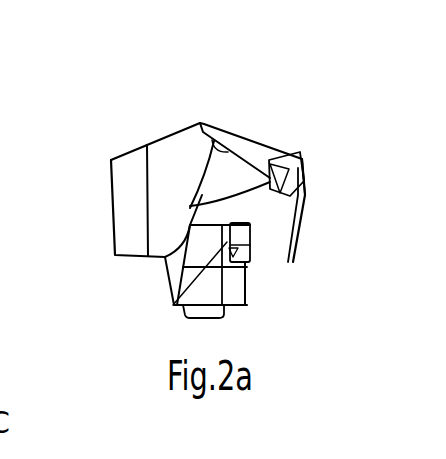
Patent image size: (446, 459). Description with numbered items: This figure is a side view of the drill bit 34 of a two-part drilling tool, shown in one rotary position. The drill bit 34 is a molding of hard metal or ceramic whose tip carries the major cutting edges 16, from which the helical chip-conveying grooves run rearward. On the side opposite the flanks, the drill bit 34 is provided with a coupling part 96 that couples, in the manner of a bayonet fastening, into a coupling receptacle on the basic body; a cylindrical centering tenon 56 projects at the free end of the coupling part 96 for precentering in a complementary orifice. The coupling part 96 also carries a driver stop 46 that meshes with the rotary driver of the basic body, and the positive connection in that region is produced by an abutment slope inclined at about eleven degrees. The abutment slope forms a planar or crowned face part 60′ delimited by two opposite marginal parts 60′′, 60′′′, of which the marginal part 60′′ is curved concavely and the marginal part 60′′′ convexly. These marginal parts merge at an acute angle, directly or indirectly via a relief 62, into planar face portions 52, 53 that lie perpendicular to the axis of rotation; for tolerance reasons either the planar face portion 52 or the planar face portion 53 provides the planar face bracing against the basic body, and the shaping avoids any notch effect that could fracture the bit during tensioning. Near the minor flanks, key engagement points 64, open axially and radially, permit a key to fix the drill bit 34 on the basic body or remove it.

The major cutting edge 16 is at (150, 150).
The drill bit 34 is at (253, 139).
The key engagement point 64 is at (288, 151).
The relief 62 is at (240, 243).
The face part 60′ is at (240, 262).
The driver stop 46 is at (359, 215).
The planar face portion 52 is at (150, 257).
The planar face portion 53 is at (273, 262).
The coupling part 96 is at (247, 302).
The marginal part 60′′ is at (167, 262).
The marginal part 60′′′ is at (173, 305).
The centering tenon 56 is at (224, 318).